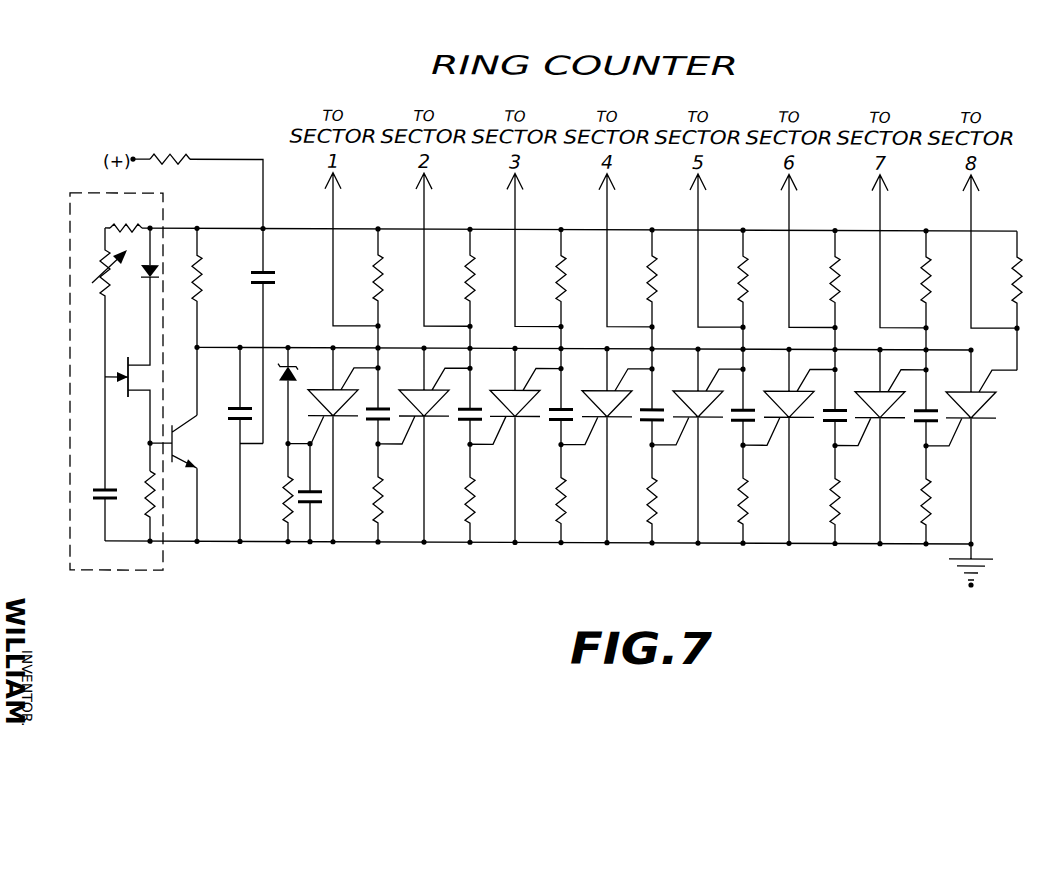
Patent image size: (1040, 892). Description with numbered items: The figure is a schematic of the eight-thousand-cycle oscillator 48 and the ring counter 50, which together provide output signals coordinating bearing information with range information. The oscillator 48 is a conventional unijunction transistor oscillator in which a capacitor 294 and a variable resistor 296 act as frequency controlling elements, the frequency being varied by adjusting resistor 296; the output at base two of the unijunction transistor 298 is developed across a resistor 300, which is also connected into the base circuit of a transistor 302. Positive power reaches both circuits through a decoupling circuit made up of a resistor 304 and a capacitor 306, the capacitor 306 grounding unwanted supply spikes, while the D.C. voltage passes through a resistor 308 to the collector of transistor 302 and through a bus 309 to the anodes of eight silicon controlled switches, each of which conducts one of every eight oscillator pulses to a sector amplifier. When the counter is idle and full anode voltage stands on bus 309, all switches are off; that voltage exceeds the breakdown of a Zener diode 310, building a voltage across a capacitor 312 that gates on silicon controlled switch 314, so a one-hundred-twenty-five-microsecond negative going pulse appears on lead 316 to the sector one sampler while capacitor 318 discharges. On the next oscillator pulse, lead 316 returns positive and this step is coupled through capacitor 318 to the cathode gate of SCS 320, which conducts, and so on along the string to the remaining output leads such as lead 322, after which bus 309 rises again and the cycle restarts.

The 8000-cycle oscillator 48 is at (100, 598).
The ring counter 50 is at (625, 549).
The capacitor 294 is at (101, 488).
The variable resistor 296 is at (97, 272).
The unijunction transistor 298 is at (128, 360).
The resistor 300 is at (150, 503).
The transistor 302 is at (183, 431).
The resistor 304 is at (190, 157).
The capacitor 306 is at (261, 287).
The resistor 308 is at (199, 262).
The bus 309 is at (270, 345).
The Zener diode 310 is at (292, 379).
The capacitor 312 is at (305, 504).
The silicon controlled switch 314 is at (376, 349).
The lead 316 is at (334, 198).
The capacitor 318 is at (380, 419).
The silicon controlled switch 320 is at (412, 388).
The output lead to sector 5 322 is at (698, 200).